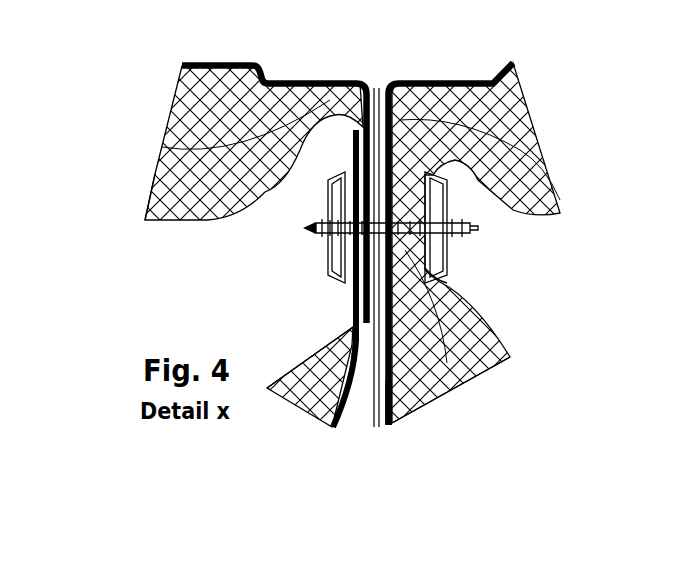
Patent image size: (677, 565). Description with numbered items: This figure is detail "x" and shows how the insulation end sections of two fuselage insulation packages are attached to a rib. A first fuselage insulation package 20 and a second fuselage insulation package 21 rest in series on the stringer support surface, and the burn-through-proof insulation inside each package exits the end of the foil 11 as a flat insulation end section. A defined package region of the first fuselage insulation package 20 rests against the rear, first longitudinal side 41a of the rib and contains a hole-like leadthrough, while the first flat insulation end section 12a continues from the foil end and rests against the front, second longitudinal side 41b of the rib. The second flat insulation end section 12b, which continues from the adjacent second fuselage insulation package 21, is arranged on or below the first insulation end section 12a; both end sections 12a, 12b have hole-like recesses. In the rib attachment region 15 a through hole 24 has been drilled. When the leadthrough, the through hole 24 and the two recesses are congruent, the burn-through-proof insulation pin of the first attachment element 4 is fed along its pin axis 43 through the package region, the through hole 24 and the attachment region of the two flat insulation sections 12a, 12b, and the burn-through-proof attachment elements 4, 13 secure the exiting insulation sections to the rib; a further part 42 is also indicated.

The foil 11 is at (168, 224).
The first flat insulation end section 12a is at (515, 63).
The second flat insulation end section 12b is at (183, 66).
The attachment element 13 is at (336, 205).
The rib attachment region 15 is at (354, 176).
The first fuselage insulation package 20 is at (282, 375).
The second fuselage insulation package 21 is at (155, 174).
The through hole 24 is at (398, 213).
The first attachment element 4 is at (314, 244).
The first longitudinal side 41a is at (373, 428).
The second longitudinal side 41b is at (361, 403).
The bolt 42 is at (475, 243).
The pin axis 43 is at (447, 273).